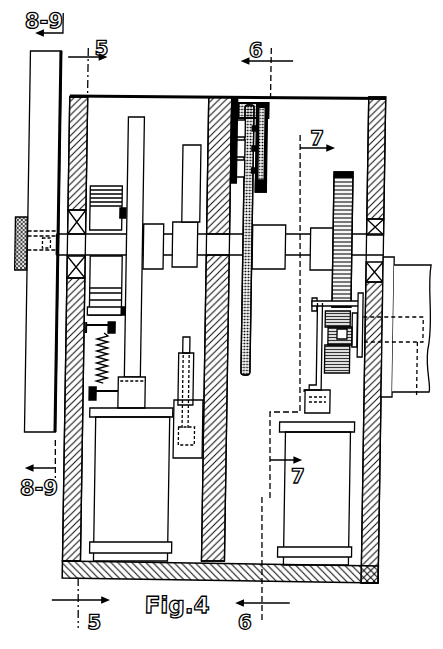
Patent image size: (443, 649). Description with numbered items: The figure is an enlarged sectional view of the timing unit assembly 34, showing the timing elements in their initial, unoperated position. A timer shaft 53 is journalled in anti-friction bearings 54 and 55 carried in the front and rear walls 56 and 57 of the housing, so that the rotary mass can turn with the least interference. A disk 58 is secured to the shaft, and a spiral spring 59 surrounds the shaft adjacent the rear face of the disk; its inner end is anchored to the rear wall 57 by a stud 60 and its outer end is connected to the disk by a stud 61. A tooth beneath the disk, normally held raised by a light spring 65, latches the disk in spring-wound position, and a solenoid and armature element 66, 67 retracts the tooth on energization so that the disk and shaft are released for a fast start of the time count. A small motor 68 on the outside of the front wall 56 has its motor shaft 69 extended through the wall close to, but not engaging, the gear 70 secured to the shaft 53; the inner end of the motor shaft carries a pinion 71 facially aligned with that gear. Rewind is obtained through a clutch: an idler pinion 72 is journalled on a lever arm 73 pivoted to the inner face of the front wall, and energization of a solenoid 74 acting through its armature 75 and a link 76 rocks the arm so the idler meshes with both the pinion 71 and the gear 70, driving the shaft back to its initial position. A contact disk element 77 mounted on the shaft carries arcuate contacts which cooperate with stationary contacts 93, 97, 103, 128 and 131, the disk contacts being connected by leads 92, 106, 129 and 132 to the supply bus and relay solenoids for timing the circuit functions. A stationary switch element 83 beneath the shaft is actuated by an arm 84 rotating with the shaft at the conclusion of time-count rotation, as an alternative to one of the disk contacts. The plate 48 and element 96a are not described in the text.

The timing unit assembly 34 is at (379, 452).
The mounting plate 48 is at (42, 410).
The timer shaft 53 is at (300, 245).
The bearing 54 is at (381, 230).
The bearing 55 is at (70, 215).
The front wall 56 is at (373, 200).
The rear wall 57 is at (75, 152).
The disk 58 is at (132, 140).
The spiral spring 59 is at (104, 192).
The stud 60 is at (111, 214).
The stud 61 is at (105, 312).
The light spring 65 is at (97, 355).
The solenoid 66 is at (130, 484).
The armature 67 is at (136, 395).
The motor 68 is at (399, 290).
The motor shaft 69 is at (398, 366).
The gear 70 is at (340, 172).
The pinion 71 is at (330, 323).
The idler pinion 72 is at (338, 368).
The lever arm 73 is at (350, 351).
The solenoid 74 is at (352, 328).
The armature 75 is at (321, 412).
The link 76 is at (323, 352).
The disk element 77 is at (251, 343).
The switch element 83 is at (185, 342).
The arm 84 is at (184, 160).
The lead 92 is at (228, 100).
The stationary contact 93 is at (264, 115).
The plate 96a is at (233, 122).
The stationary contact 97 is at (264, 130).
The stationary contact 103 is at (264, 145).
The lead 106 is at (234, 142).
The stationary contact 128 is at (264, 172).
The lead 129 is at (236, 178).
The stationary contact 131 is at (264, 159).
The lead 132 is at (235, 160).